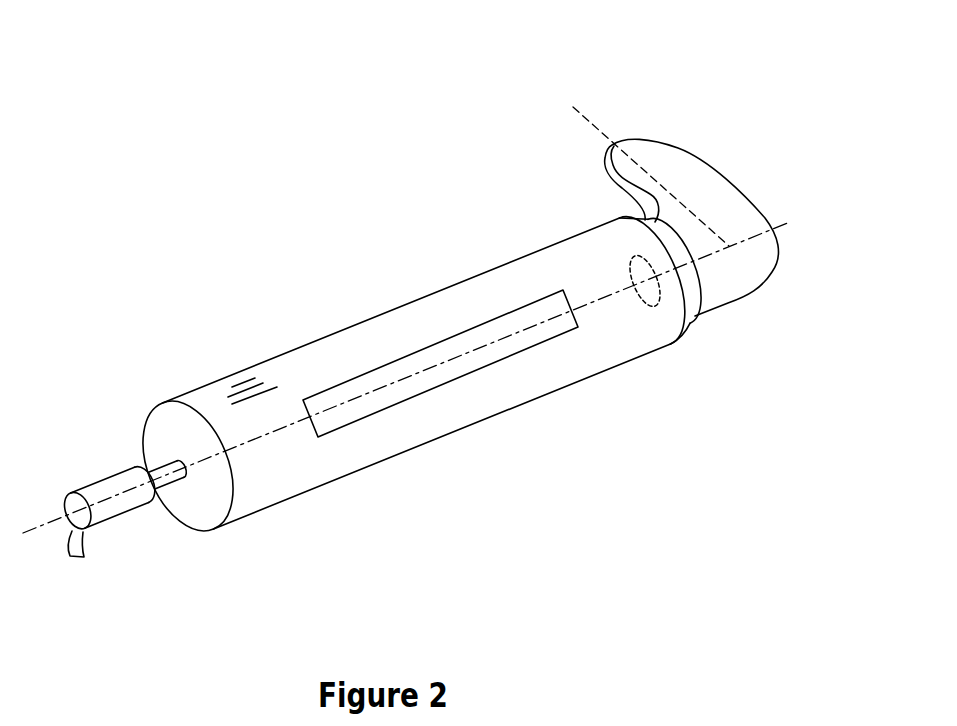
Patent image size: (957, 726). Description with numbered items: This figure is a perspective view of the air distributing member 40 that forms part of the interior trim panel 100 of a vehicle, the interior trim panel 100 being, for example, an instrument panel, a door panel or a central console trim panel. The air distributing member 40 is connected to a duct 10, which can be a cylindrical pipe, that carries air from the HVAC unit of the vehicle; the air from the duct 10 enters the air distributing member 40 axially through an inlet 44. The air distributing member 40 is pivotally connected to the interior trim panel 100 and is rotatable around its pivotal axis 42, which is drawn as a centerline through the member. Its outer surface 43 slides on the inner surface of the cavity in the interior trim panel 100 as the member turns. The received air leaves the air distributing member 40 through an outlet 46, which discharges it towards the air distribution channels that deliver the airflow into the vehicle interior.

The interior trim panel 100 is at (435, 197).
The duct 10 is at (690, 153).
The air distributing member 40 is at (372, 307).
The pivotal axis 42 is at (285, 428).
The outer surface 43 is at (240, 382).
The inlet 44 is at (658, 300).
The outlet 46 is at (492, 365).